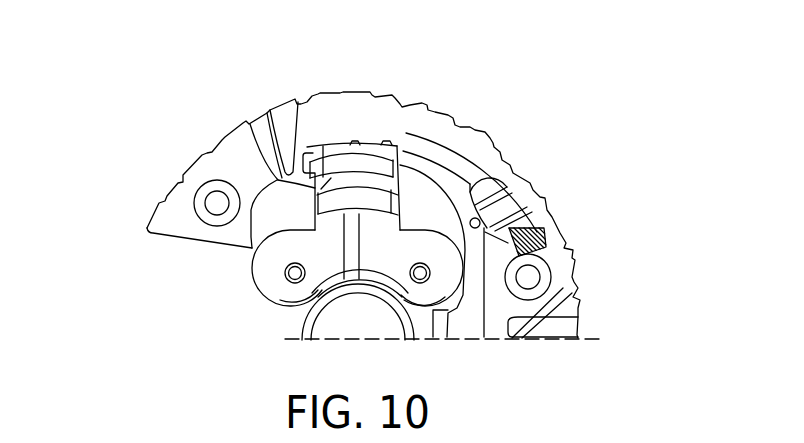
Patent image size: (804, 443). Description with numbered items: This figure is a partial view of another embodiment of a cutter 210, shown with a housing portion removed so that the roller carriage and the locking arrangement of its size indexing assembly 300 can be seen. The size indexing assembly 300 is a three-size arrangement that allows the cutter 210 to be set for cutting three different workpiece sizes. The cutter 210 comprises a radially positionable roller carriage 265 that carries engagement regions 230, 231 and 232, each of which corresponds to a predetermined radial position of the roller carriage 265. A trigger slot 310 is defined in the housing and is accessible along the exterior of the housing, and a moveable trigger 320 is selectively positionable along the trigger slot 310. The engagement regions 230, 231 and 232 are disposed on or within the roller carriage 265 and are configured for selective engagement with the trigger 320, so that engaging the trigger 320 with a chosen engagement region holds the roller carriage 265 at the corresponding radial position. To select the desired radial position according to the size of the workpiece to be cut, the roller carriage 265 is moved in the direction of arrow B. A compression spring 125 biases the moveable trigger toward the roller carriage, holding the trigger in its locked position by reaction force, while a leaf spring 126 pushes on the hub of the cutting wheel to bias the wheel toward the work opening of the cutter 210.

The cutter 210 is at (617, 104).
The engagement region 230 is at (241, 137).
The engagement region 231 is at (372, 187).
The engagement region 232 is at (370, 143).
The roller carriage 265 is at (307, 153).
The size indexing assembly 300 is at (118, 159).
The trigger slot 310 is at (492, 143).
The moveable trigger 320 is at (535, 198).
The compression spring 125 is at (557, 228).
The leaf spring 126 is at (577, 308).
The arrow B is at (355, 128).